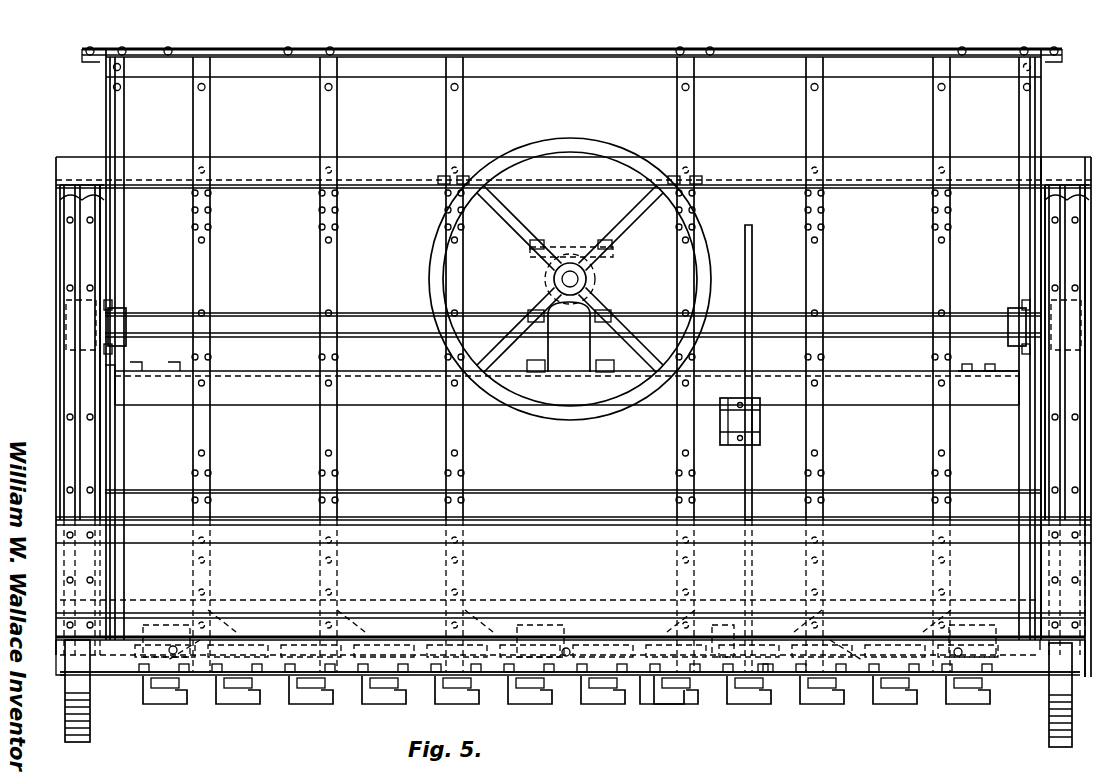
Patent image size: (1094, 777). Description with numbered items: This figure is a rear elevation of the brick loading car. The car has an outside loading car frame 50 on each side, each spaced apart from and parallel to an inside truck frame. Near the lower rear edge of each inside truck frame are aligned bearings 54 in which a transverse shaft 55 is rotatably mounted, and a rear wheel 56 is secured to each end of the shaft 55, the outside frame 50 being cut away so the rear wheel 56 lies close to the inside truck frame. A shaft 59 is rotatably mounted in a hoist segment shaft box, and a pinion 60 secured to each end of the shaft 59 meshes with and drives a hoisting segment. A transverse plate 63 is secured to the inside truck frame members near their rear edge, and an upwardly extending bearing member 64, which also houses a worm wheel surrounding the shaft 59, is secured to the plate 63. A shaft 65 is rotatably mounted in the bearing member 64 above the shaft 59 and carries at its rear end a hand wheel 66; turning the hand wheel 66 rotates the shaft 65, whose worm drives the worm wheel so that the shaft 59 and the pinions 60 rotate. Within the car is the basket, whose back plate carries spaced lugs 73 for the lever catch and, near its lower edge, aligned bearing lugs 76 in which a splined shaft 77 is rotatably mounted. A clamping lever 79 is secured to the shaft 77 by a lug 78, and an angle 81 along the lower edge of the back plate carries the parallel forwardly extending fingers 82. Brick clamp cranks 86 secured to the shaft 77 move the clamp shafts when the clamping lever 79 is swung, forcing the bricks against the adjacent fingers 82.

The outside loading car frame 50 is at (1085, 387).
The bearings 54 is at (1046, 678).
The shaft 55 is at (1022, 640).
The rear wheel 56 is at (90, 728).
The shaft 59 is at (396, 325).
The pinion 60 is at (68, 300).
The transverse plate 63 is at (986, 372).
The bearing member 64 is at (609, 370).
The shaft 65 is at (569, 262).
The hand wheel 66 is at (535, 412).
The lugs 73 is at (723, 422).
The bearing lugs 76 is at (175, 627).
The splined shaft 77 is at (570, 122).
The lug 78 is at (718, 632).
The clamping lever 79 is at (752, 295).
The angle 81 is at (805, 672).
The fingers 82 is at (660, 705).
The brick clamp crank 86 is at (765, 675).